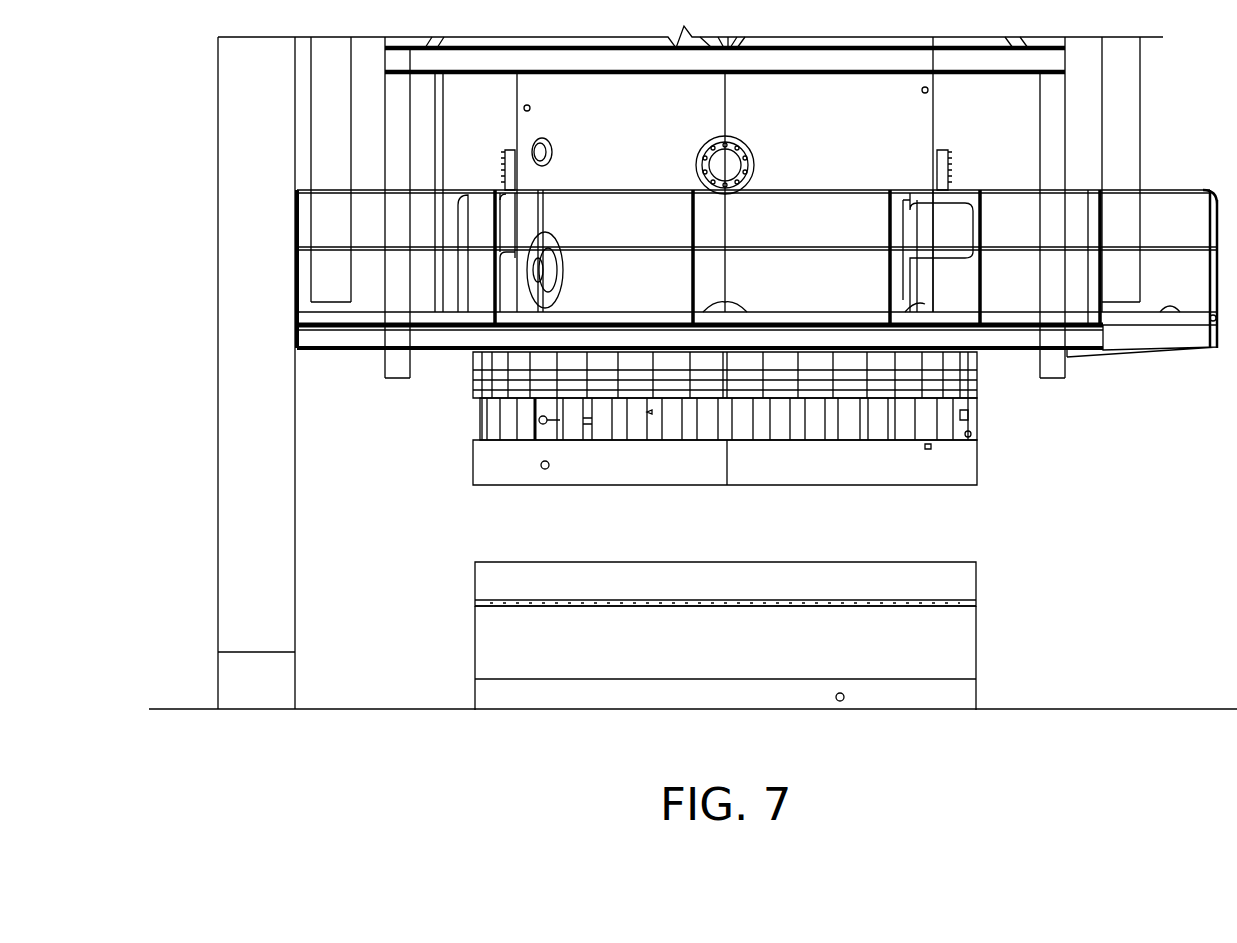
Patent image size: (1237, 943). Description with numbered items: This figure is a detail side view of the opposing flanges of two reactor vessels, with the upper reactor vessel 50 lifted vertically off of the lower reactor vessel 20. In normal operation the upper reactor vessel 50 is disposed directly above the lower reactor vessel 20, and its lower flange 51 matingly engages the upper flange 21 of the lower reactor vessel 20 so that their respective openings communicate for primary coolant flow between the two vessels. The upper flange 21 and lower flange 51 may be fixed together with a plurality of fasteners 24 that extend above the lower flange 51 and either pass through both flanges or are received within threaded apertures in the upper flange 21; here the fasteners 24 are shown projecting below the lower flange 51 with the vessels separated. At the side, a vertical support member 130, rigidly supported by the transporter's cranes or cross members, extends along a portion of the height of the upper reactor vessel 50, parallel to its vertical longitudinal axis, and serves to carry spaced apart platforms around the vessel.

The upper reactor vessel 50 is at (890, 138).
The lower flange 51 is at (962, 472).
The fasteners 24 is at (800, 425).
The lower reactor vessel 20 is at (737, 663).
The upper flange 21 is at (522, 582).
The vertical support members 130 is at (243, 617).